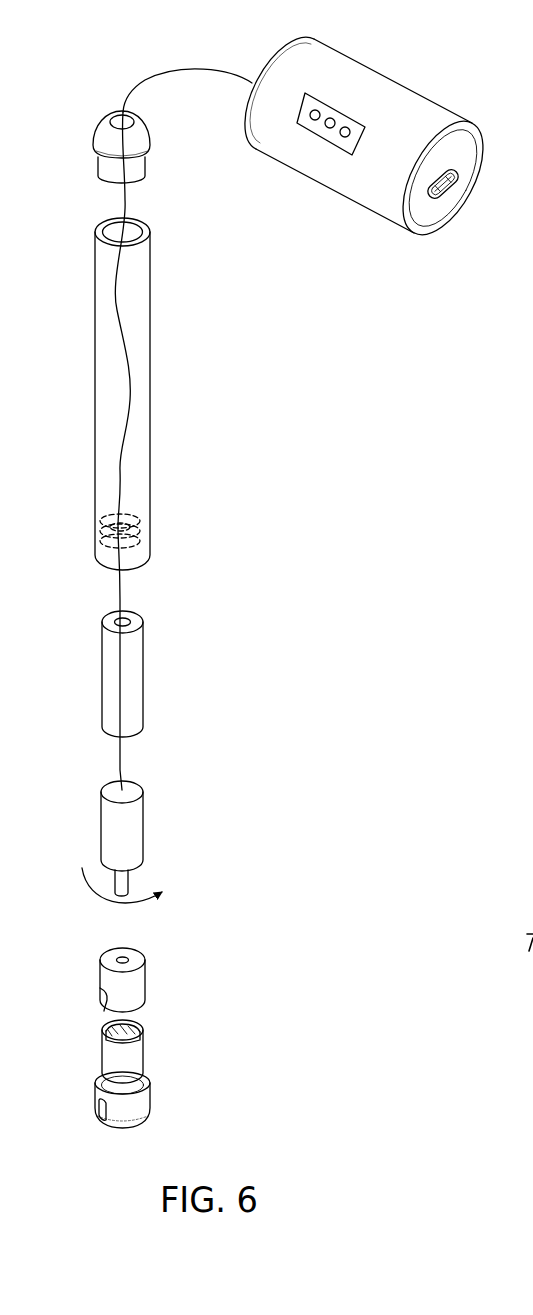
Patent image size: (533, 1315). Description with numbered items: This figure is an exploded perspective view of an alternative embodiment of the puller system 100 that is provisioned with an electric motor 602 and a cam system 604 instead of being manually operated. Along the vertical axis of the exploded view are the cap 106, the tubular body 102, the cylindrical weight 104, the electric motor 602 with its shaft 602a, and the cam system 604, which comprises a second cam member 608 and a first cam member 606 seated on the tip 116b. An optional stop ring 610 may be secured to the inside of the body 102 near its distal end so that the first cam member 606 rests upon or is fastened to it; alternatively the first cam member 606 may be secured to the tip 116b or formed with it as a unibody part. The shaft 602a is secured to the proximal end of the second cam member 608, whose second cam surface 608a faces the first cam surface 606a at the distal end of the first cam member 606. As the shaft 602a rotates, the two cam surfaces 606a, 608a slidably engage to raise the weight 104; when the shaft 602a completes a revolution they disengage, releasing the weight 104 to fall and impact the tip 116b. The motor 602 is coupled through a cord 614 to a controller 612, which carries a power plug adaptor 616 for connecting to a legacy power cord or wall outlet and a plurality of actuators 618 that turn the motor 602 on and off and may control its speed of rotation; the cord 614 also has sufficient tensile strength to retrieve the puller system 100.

The puller system 100 is at (247, 490).
The body 102 is at (151, 396).
The weight 104 is at (144, 676).
The cap 106 is at (96, 136).
The tip 116b is at (149, 1107).
The electric motor 602 is at (144, 826).
The shaft 602a is at (129, 882).
The cam system 604 is at (163, 1008).
The first cam member 606 is at (104, 1058).
The first cam surface 606a is at (141, 1038).
The second cam member 608 is at (142, 958).
The second cam surface 608a is at (102, 1000).
The stop ring 610 is at (146, 544).
The controller 612 is at (332, 197).
The cord 614 is at (176, 71).
The power plug adaptor 616 is at (456, 172).
The actuators 618 is at (341, 99).